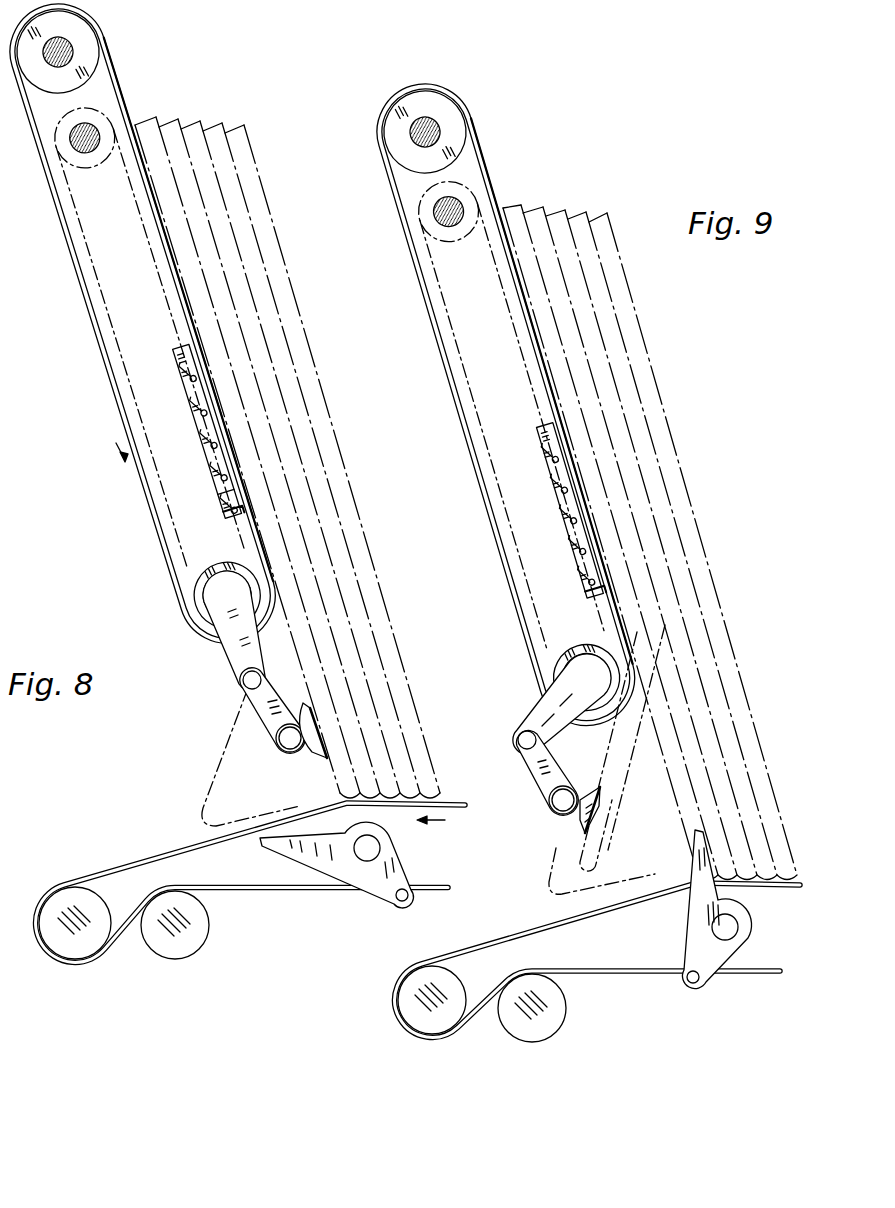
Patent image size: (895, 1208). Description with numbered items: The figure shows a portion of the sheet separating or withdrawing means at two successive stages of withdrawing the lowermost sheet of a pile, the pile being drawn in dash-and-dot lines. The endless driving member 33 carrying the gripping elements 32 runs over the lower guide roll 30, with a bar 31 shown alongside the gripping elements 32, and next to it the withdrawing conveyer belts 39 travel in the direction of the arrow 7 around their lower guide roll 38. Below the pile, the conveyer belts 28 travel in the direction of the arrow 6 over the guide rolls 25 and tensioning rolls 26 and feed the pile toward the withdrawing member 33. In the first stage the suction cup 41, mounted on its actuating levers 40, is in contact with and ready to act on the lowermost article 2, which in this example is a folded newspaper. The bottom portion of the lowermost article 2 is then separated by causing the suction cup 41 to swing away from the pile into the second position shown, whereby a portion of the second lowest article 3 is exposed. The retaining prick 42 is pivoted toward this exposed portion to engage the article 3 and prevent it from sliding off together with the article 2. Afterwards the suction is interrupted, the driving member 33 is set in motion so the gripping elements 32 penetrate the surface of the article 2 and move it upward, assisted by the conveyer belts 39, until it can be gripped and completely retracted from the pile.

In FIG. 8, the lowermost article 2 is at (300, 633).
In FIG. 9, the lowermost article 2 is at (614, 795).
In FIG. 8, the second lowest article 3 is at (322, 650).
In FIG. 9, the second lowest article 3 is at (650, 542).
In FIG. 8, the arrow 6 is at (438, 822).
In FIG. 8, the arrow 7 is at (116, 441).
In FIG. 8, the guide rolls 25 is at (66, 945).
In FIG. 8, the tensioning rolls 26 is at (176, 950).
In FIG. 8, the conveyer belts 28 is at (138, 862).
In FIG. 9, the conveyer belts 28 is at (490, 945).
In FIG. 8, the lower guide roll 30 is at (204, 600).
In FIG. 9, the lower guide roll 30 is at (560, 662).
In FIG. 8, the gripper bar 31 is at (182, 322).
In FIG. 9, the gripper bar 31 is at (533, 385).
In FIG. 8, the gripping elements 32 is at (192, 376).
In FIG. 9, the gripping elements 32 is at (553, 458).
In FIG. 8, the endless driving member 33 is at (215, 462).
In FIG. 8, the lower guide roll 38 is at (205, 628).
In FIG. 9, the lower guide roll 38 is at (548, 683).
In FIG. 8, the withdrawing conveyer belts 39 is at (158, 517).
In FIG. 9, the withdrawing conveyer belts 39 is at (505, 561).
In FIG. 8, the actuating levers 40 is at (262, 712).
In FIG. 9, the actuating levers 40 is at (540, 797).
In FIG. 8, the suction cup 41 is at (322, 732).
In FIG. 9, the suction cup 41 is at (578, 820).
In FIG. 8, the retaining prick 42 is at (325, 852).
In FIG. 9, the retaining prick 42 is at (698, 860).